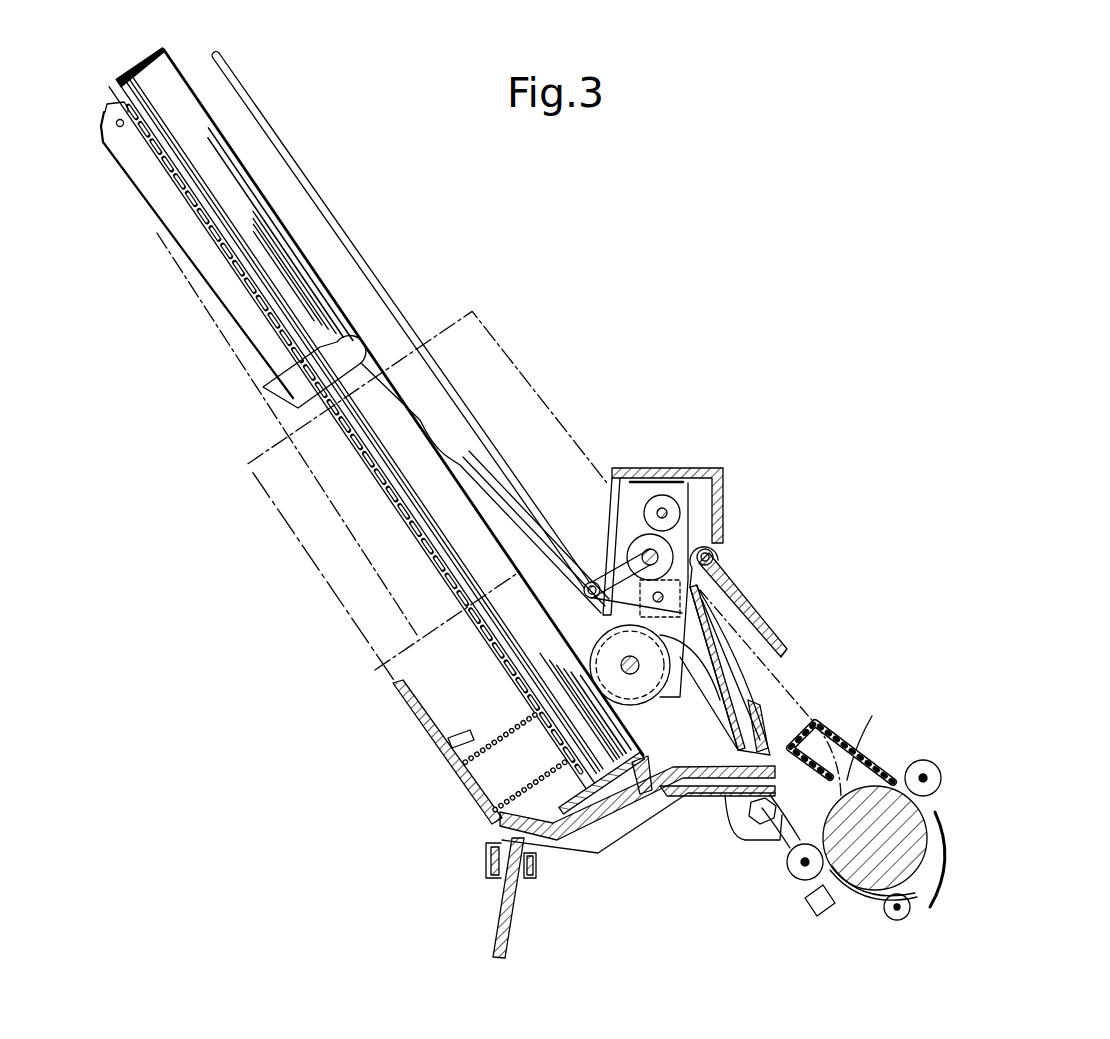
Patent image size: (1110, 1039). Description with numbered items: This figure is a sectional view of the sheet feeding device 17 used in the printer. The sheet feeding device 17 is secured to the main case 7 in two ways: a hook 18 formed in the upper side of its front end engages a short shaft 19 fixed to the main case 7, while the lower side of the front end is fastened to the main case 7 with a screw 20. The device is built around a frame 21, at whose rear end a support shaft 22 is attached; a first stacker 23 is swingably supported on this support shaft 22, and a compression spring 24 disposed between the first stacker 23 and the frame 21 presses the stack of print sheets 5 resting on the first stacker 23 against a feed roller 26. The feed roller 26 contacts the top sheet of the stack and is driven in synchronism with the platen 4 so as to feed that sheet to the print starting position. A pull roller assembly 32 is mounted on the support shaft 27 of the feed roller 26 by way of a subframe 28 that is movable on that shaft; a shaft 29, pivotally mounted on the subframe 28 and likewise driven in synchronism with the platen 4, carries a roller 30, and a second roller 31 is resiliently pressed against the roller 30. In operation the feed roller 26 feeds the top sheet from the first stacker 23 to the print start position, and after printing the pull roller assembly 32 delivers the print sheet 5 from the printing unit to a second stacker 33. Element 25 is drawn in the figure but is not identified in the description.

The platen 4 is at (902, 825).
The print sheets 5 is at (170, 97).
The main case 7 is at (510, 905).
The sheet feeding device 17 is at (228, 522).
The hook 18 is at (745, 805).
The short shaft 19 is at (782, 838).
The screw 20 is at (485, 862).
The frame 21 is at (462, 775).
The support shaft 22 is at (112, 122).
The first stacker 23 is at (258, 330).
The compression spring 24 is at (487, 762).
The block 25 is at (822, 915).
The feed roller 26 is at (600, 660).
The support shaft 27 is at (634, 672).
The subframe 28 is at (665, 540).
The shaft 29 is at (716, 557).
The roller 30 is at (637, 495).
The roller 31 is at (652, 532).
The pull roller assembly 32 is at (703, 352).
The second stacker 33 is at (358, 250).